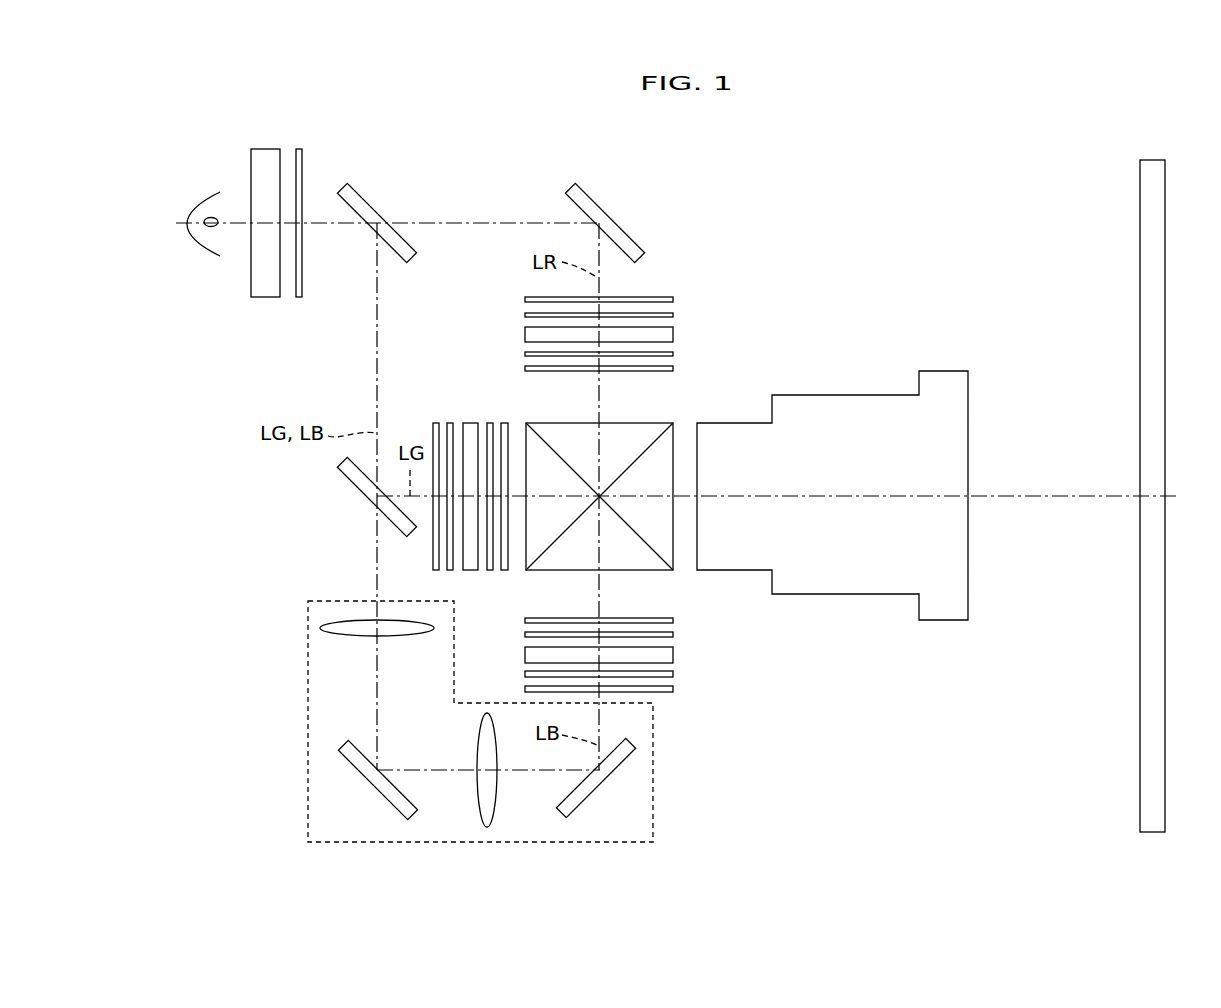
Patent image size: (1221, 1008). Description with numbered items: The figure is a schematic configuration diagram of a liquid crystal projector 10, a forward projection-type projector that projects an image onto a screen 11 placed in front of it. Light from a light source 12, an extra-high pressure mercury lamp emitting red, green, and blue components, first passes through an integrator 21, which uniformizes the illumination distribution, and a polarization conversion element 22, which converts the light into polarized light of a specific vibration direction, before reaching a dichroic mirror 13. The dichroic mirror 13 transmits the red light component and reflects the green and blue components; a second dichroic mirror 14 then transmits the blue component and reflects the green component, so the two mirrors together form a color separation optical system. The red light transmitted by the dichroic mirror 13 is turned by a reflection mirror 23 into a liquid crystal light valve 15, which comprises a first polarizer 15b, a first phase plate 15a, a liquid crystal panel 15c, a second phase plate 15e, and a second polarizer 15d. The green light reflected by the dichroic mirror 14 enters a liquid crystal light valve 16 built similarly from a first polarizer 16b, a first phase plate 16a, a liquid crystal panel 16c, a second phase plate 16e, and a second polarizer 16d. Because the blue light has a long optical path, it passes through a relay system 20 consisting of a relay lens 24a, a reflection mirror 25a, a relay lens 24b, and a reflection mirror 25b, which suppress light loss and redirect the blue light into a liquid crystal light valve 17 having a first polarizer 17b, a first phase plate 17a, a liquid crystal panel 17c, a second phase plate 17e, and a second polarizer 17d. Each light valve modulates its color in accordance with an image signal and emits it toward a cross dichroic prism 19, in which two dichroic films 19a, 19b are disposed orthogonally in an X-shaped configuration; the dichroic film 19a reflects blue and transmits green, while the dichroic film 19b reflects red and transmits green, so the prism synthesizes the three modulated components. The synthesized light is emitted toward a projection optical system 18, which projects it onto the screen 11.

The projector 10 is at (878, 195).
The screen 11 is at (1150, 172).
The light source 12 is at (200, 205).
The dichroic mirror 13 is at (361, 200).
The dichroic mirror 14 is at (365, 493).
The liquid crystal light valve 15 is at (672, 280).
The first phase plate 15a is at (673, 315).
The first polarizer 15b is at (673, 299).
The liquid crystal panel 15c is at (673, 335).
The second polarizer 15d is at (652, 346).
The second phase plate 15e is at (673, 354).
The liquid crystal light valve 16 is at (395, 419).
The first phase plate 16a is at (450, 423).
The first polarizer 16b is at (436, 423).
The liquid crystal panel 16c is at (470, 423).
The second polarizer 16d is at (505, 423).
The second phase plate 16e is at (490, 423).
The liquid crystal light valve 17 is at (672, 705).
The first phase plate 17a is at (673, 674).
The first polarizer 17b is at (652, 739).
The liquid crystal panel 17c is at (673, 655).
The second polarizer 17d is at (673, 620).
The second phase plate 17e is at (673, 634).
The projection optical system 18 is at (945, 610).
The cross dichroic prism 19 is at (599, 491).
The dichroic film 19a is at (645, 450).
The dichroic film 19b is at (645, 555).
The relay system 20 is at (509, 701).
The integrator 21 is at (267, 158).
The polarization conversion element 22 is at (302, 170).
The reflection mirror 23 is at (610, 220).
The relay lens 24a is at (352, 622).
The relay lens 24b is at (492, 790).
The reflection mirror 25a is at (353, 763).
The reflection mirror 25b is at (620, 763).